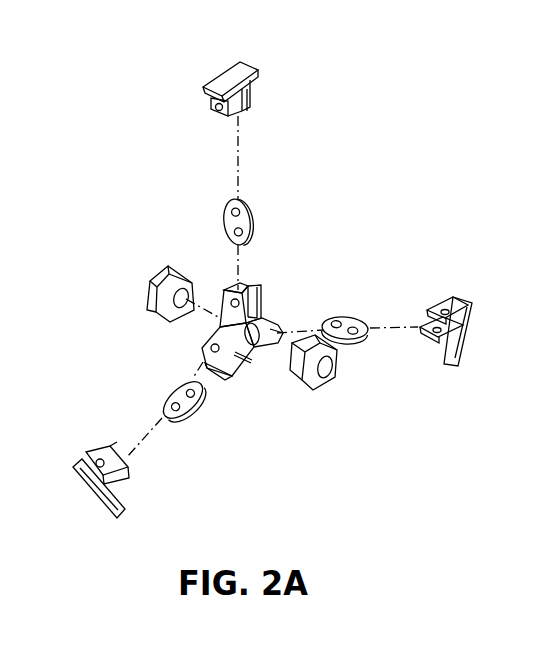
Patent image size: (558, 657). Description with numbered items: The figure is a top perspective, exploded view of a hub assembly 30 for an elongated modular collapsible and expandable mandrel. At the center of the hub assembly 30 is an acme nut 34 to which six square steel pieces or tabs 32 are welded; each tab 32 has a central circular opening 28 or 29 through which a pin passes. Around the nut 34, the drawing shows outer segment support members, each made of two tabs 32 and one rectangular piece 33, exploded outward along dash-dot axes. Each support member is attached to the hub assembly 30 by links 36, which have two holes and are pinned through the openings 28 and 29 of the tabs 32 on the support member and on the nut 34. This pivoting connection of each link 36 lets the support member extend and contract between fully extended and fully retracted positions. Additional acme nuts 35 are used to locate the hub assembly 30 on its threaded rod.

The central circular opening 28 is at (197, 352).
The central circular opening 29 is at (100, 458).
The hub assembly 30 is at (367, 143).
The tab 32 is at (252, 100).
The rectangular piece 33 is at (228, 80).
The acme nut 34 is at (220, 327).
The acme nut 35 is at (140, 298).
The link 36 is at (226, 220).